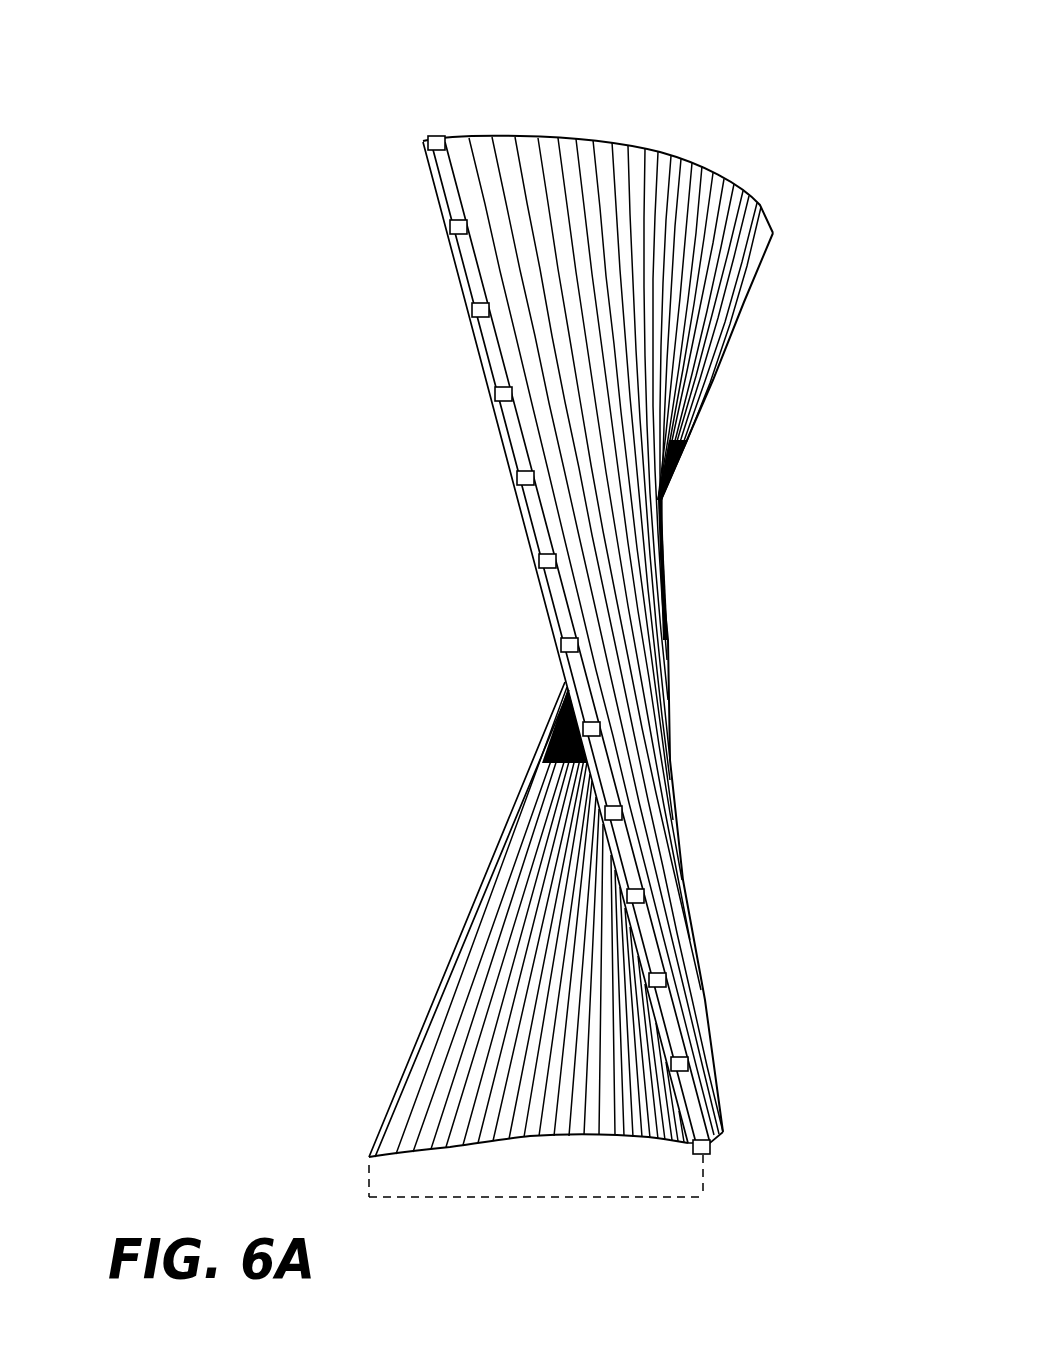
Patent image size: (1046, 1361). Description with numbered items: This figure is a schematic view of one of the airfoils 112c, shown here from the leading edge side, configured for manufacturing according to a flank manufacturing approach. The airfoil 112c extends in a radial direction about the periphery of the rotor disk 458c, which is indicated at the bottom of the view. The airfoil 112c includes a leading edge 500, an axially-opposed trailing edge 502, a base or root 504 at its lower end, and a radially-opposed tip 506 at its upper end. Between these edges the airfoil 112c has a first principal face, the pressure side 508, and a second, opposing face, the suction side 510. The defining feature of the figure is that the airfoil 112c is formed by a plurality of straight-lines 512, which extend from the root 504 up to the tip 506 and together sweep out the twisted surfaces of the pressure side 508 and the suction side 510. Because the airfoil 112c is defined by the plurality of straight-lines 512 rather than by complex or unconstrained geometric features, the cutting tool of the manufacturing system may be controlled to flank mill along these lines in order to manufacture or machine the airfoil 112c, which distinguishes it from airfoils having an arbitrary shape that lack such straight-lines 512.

The airfoil 112c is at (661, 107).
The leading edge 500 is at (562, 646).
The trailing edge 502 is at (410, 1047).
The root 504 is at (572, 1139).
The tip 506 is at (720, 178).
The pressure side 508 is at (568, 770).
The suction side 510 is at (648, 641).
The straight-lines 512 is at (497, 150).
The rotor disk 458c is at (703, 1172).